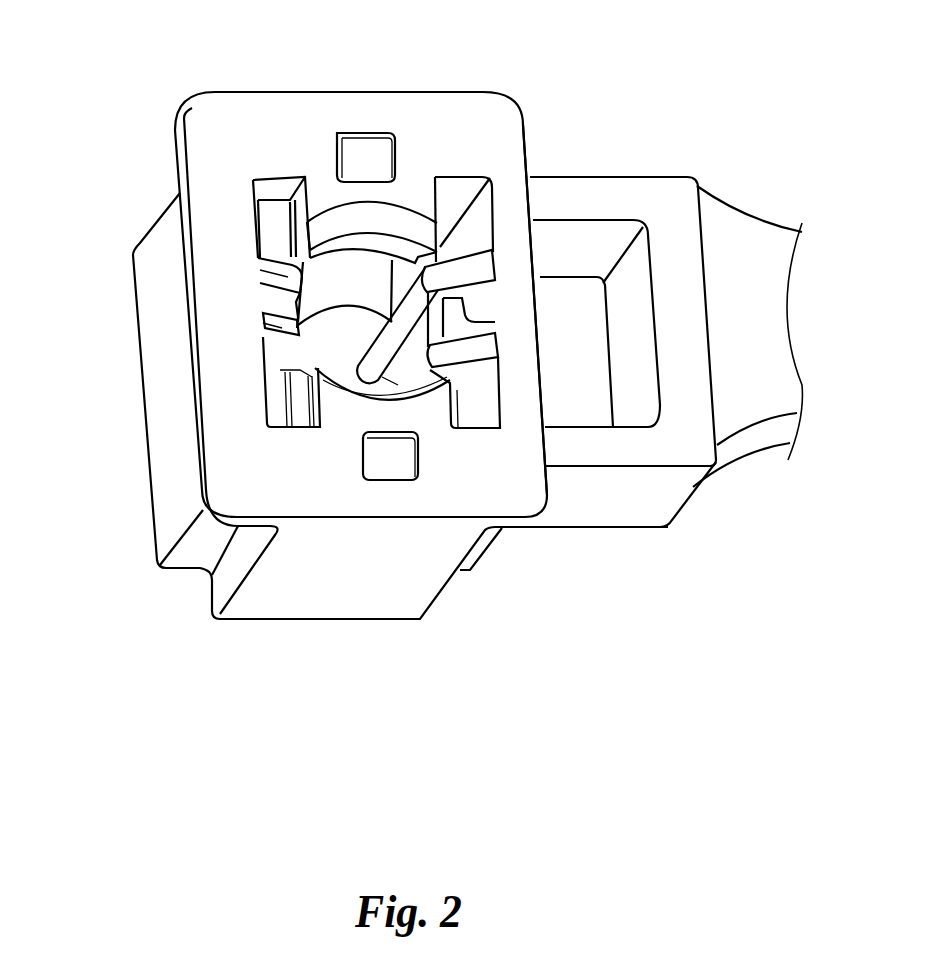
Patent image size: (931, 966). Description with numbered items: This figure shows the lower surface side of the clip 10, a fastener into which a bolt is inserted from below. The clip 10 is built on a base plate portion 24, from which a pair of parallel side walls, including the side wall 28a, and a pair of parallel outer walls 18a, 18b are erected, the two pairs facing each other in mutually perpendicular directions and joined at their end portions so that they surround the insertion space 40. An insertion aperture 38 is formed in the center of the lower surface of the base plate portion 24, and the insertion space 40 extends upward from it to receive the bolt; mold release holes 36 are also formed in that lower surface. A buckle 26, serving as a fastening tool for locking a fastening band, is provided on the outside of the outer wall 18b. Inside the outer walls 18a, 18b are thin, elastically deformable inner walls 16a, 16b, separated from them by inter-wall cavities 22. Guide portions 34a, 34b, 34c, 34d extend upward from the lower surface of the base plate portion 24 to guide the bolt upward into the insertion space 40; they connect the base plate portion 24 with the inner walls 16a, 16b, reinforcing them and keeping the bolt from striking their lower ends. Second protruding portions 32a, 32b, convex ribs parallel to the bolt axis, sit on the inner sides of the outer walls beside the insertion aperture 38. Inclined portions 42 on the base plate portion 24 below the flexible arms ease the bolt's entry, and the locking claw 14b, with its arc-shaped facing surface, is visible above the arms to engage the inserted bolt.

The clip 10 is at (473, 751).
The locking claw 14b is at (342, 287).
The inner wall 16a is at (280, 200).
The inner wall 16b is at (488, 383).
The outer wall 18a is at (165, 387).
The outer wall 18b is at (530, 385).
The inter-wall cavity 22 is at (267, 185).
The base plate portion 24 is at (505, 495).
The buckle 26 is at (680, 332).
The side wall 28a is at (367, 600).
The second protruding portion 32a is at (283, 307).
The second protruding portion 32b is at (480, 303).
The guide portion 34a is at (283, 352).
The guide portion 34b is at (280, 262).
The guide portion 34c is at (490, 343).
The guide portion 34d is at (480, 268).
The mold release hole 36 is at (375, 150).
The insertion aperture 38 is at (335, 235).
The insertion space 40 is at (318, 357).
The inclined portion 42 is at (400, 222).